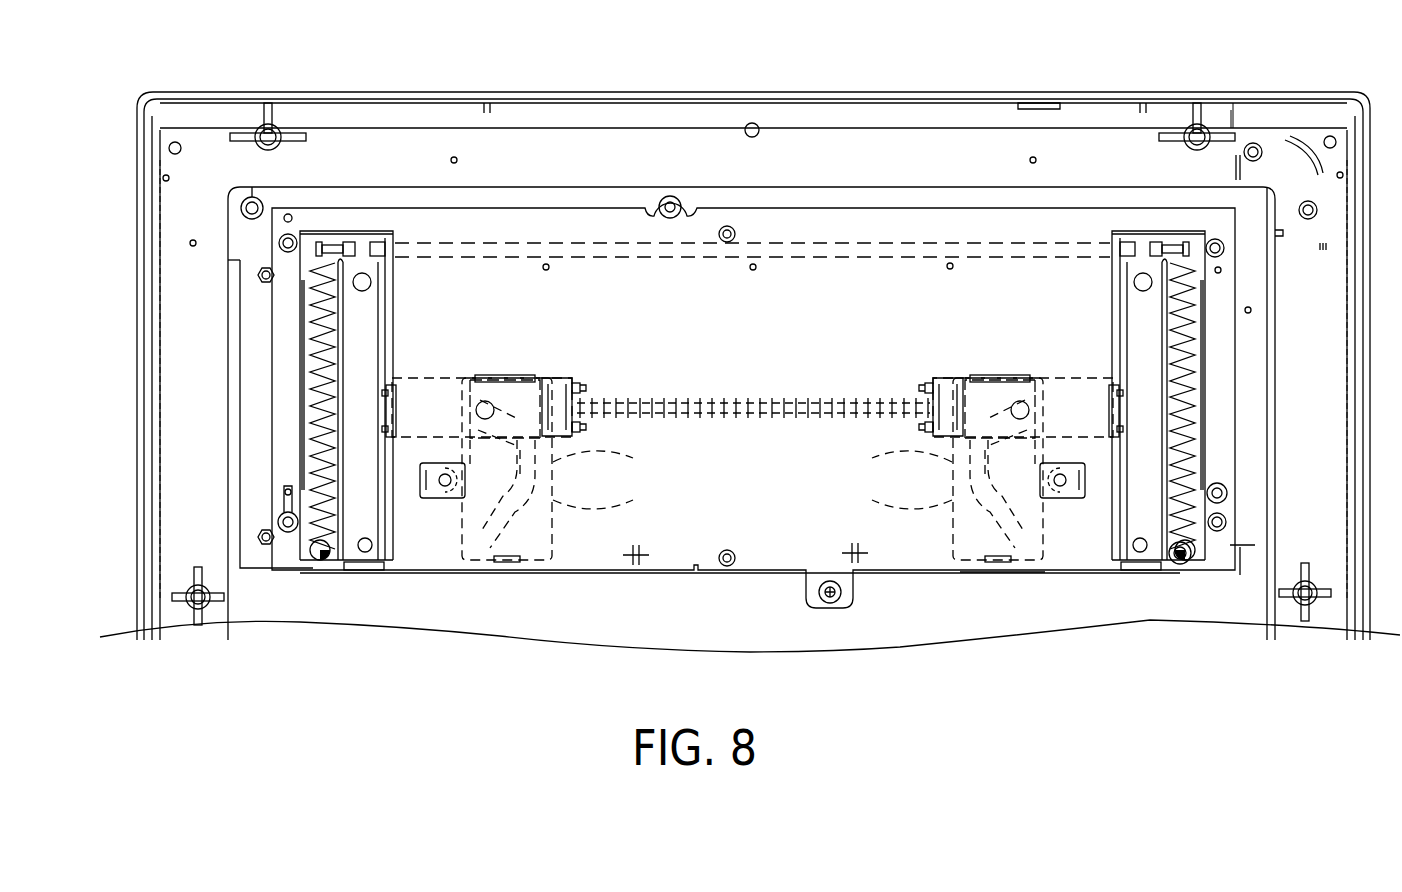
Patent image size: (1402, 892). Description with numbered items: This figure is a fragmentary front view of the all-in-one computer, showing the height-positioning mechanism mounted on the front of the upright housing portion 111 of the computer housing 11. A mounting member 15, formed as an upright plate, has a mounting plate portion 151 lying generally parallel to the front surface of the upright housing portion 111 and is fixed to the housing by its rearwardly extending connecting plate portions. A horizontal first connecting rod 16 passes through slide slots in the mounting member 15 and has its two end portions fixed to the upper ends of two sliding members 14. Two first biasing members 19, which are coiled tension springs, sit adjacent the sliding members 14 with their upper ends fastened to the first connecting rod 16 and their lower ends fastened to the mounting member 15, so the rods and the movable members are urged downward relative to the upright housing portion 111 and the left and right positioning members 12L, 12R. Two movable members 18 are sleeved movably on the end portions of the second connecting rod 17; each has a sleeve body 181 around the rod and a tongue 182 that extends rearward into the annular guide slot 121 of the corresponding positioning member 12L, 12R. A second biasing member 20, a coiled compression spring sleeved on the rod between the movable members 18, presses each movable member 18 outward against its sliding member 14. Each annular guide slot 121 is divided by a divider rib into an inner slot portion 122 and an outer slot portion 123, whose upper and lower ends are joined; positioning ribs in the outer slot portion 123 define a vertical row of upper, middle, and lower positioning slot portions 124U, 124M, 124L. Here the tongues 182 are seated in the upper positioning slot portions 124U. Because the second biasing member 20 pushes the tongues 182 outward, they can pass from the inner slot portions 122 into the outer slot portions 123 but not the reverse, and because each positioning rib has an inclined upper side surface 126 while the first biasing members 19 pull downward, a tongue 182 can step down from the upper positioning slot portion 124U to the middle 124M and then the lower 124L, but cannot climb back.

The computer housing 11 is at (1255, 72).
The upright housing portion 111 is at (1108, 110).
The mounting member 15 is at (905, 205).
The mounting plate portion 151 is at (617, 232).
The first connecting rod 16 is at (808, 240).
The sliding member 14 is at (368, 328).
The first biasing member 19 is at (322, 355).
The second connecting rod 17 is at (806, 395).
The second biasing member 20 is at (722, 395).
The movable member 18 is at (590, 362).
The sleeve body 181 is at (564, 364).
The tongue 182 is at (478, 380).
The left positioning member 12L is at (555, 532).
The right positioning member 12R is at (950, 532).
The annular guide slot 121 is at (875, 458).
The inner slot portion 122 is at (875, 500).
The outer slot portion 123 is at (508, 375).
The upper positioning slot portion 124U is at (488, 372).
The middle positioning slot portion 124M is at (474, 432).
The lower positioning slot portion 124L is at (462, 520).
The inclined upper side surface 126 is at (1017, 573).